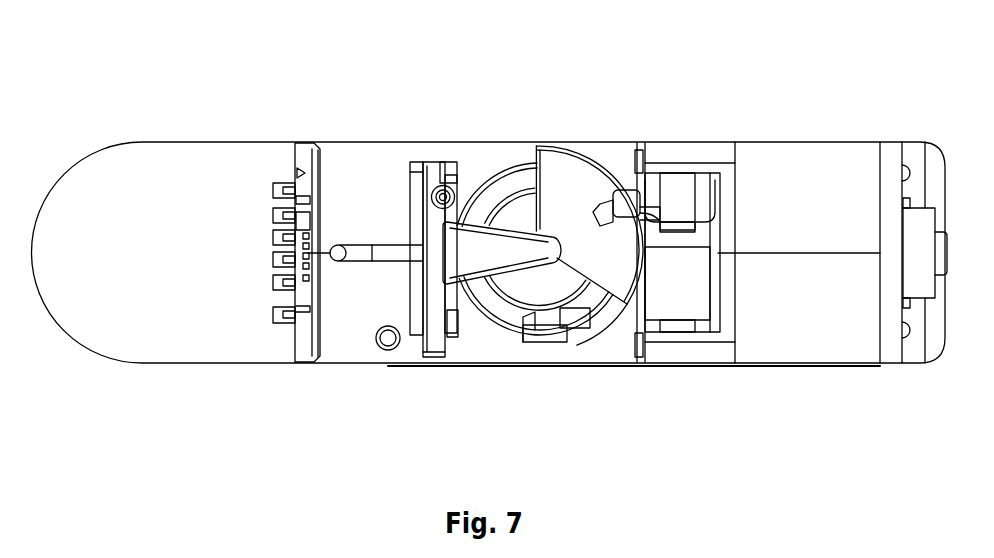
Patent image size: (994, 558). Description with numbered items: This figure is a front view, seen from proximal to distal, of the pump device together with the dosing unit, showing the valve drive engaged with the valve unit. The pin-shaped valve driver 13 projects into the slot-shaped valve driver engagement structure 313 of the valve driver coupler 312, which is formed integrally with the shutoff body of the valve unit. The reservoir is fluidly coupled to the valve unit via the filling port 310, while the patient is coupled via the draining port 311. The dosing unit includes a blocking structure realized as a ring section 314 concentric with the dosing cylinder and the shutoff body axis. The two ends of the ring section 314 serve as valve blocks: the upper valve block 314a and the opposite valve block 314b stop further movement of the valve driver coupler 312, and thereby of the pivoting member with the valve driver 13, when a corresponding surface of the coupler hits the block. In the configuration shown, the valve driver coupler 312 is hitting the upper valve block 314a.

The valve driver 13 is at (625, 202).
The filling port 310 is at (334, 258).
The draining port 311 is at (440, 193).
The valve driver coupler 312 is at (610, 263).
The valve driver engagement structure 313 is at (600, 212).
The ring section 314 is at (483, 205).
The upper valve block 314a is at (531, 187).
The valve block 314b is at (530, 315).